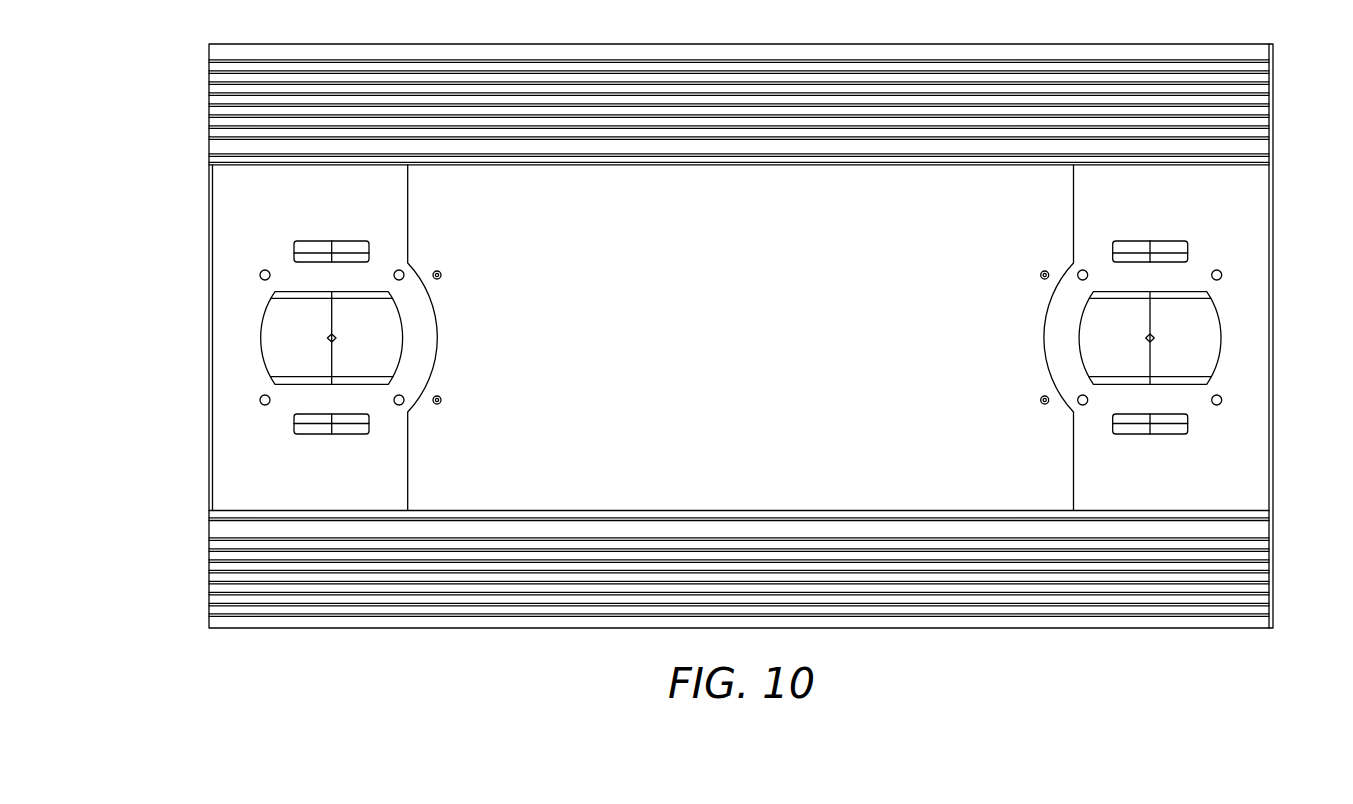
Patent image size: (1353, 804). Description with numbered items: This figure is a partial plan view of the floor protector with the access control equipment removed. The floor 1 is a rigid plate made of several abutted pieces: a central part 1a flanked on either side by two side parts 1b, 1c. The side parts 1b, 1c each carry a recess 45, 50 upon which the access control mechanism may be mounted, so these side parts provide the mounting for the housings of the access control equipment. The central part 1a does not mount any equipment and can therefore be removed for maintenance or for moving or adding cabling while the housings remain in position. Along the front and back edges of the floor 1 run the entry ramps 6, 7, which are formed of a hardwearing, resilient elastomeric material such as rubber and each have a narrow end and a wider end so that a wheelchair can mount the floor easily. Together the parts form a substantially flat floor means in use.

The floor 1 is at (1273, 222).
The central part 1a is at (755, 346).
The side part 1b is at (295, 486).
The side part 1c is at (1161, 486).
The entry ramp 6 is at (1273, 563).
The entry ramp 7 is at (1273, 97).
The recess 45 is at (270, 338).
The recess 50 is at (1211, 338).